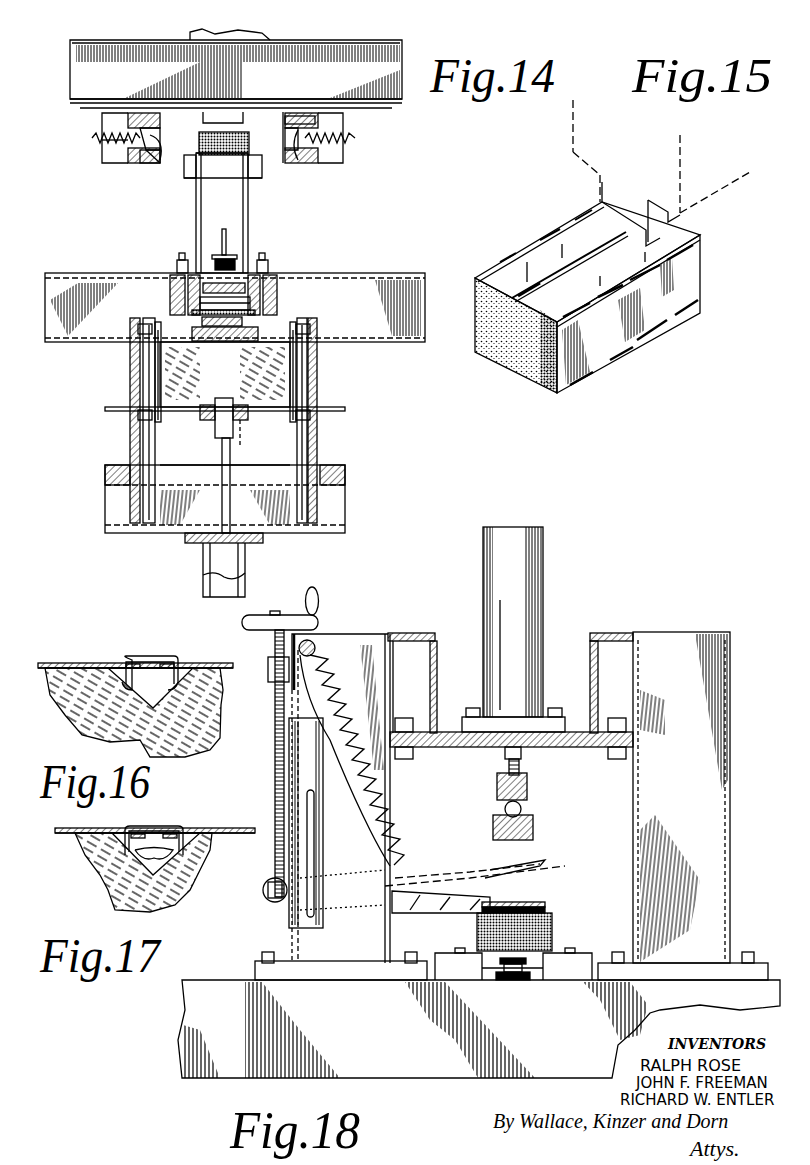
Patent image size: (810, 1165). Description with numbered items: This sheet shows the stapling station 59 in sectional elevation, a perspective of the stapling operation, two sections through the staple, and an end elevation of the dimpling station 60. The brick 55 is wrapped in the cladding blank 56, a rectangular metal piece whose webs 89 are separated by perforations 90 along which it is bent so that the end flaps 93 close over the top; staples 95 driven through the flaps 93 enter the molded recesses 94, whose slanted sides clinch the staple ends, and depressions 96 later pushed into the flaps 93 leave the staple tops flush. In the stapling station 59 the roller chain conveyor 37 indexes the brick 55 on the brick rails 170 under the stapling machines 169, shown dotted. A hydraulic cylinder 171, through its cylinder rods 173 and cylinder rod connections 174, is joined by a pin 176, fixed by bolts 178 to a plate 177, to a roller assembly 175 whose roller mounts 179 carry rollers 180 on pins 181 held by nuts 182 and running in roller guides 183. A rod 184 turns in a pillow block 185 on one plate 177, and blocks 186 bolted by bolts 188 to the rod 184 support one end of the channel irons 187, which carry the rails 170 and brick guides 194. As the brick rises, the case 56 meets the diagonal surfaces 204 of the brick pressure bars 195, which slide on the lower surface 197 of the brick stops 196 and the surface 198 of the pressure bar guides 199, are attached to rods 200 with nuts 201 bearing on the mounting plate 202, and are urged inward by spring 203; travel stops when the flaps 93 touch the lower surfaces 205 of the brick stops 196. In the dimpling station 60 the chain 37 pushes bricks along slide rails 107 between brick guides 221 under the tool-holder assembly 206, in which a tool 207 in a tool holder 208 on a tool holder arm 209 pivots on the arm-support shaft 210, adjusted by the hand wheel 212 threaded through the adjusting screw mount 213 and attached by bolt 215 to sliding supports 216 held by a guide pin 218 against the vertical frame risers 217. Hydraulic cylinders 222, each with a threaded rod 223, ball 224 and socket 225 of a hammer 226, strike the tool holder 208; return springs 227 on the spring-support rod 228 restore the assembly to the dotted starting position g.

In FIG. 14, the roller chain conveyor 37 is at (228, 257).
In FIG. 18, the roller chain conveyor 37 is at (513, 982).
In FIG. 14, the brick 55 is at (245, 170).
In FIG. 15, the brick 55 is at (512, 357).
In FIG. 16, the brick 55 is at (216, 720).
In FIG. 17, the brick 55 is at (108, 878).
In FIG. 14, the cladding blank 56 is at (200, 138).
In FIG. 15, the cladding blank 56 is at (700, 292).
In FIG. 16, the cladding blank 56 is at (95, 662).
In FIG. 17, the cladding blank 56 is at (100, 830).
In FIG. 14, the stapling station 59 is at (355, 225).
In FIG. 18, the dimpling station 60 is at (548, 630).
In FIG. 15, the webs 89 is at (655, 340).
In FIG. 15, the perforations 90 is at (590, 205).
In FIG. 14, the end flaps 93 is at (238, 135).
In FIG. 15, the end flaps 93 is at (566, 257).
In FIG. 16, the end flaps 93 is at (200, 662).
In FIG. 17, the end flaps 93 is at (200, 830).
In FIG. 16, the recesses 94 is at (162, 702).
In FIG. 17, the recesses 94 is at (165, 872).
In FIG. 15, the staples 95 is at (545, 280).
In FIG. 16, the staples 95 is at (148, 658).
In FIG. 17, the staples 95 is at (148, 828).
In FIG. 17, the depressions 96 is at (178, 830).
In FIG. 18, the slide rails 107 is at (465, 980).
In FIG. 14, the stapling machines 169 is at (213, 118).
In FIG. 15, the stapling machines 169 is at (654, 167).
In FIG. 14, the brick rails 170 is at (190, 165).
In FIG. 14, the hydraulic cylinder 171 is at (203, 566).
In FIG. 14, the cylinder rods 173 is at (222, 465).
In FIG. 14, the cylinder rod connections 174 is at (230, 445).
In FIG. 14, the roller assembly 175 is at (176, 412).
In FIG. 14, the pin 176 is at (242, 420).
In FIG. 14, the plate 177 is at (220, 387).
In FIG. 14, the bolts 178 is at (241, 435).
In FIG. 14, the roller mounts 179 is at (135, 358).
In FIG. 14, the rollers 180 is at (143, 324).
In FIG. 14, the pins 181 is at (157, 330).
In FIG. 14, the nuts 182 is at (296, 322).
In FIG. 14, the roller guides 183 is at (304, 469).
In FIG. 14, the rod 184 is at (270, 305).
In FIG. 14, the pillow block 185 is at (230, 341).
In FIG. 14, the blocks 186 is at (178, 283).
In FIG. 14, the channel irons 187 is at (200, 202).
In FIG. 14, the bolts 188 is at (180, 260).
In FIG. 14, the brick guides 194 is at (240, 170).
In FIG. 14, the brick pressure bars 195 is at (160, 136).
In FIG. 14, the brick stops 196 is at (291, 124).
In FIG. 14, the lower surface 197 is at (284, 112).
In FIG. 14, the surface 198 is at (150, 156).
In FIG. 14, the pressure bar guides 199 is at (140, 160).
In FIG. 14, the rods 200 is at (92, 138).
In FIG. 14, the nuts 201 is at (355, 138).
In FIG. 14, the mounting plate 202 is at (100, 118).
In FIG. 14, the spring 203 is at (335, 127).
In FIG. 14, the diagonal surfaces 204 is at (162, 160).
In FIG. 14, the lower surfaces 205 is at (172, 140).
In FIG. 18, the tool-holder assembly 206 is at (450, 932).
In FIG. 18, the tool 207 is at (522, 903).
In FIG. 18, the tool holder 208 is at (546, 910).
In FIG. 18, the tool holder arm 209 is at (430, 917).
In FIG. 18, the arm-support shaft 210 is at (263, 893).
In FIG. 18, the hand wheel 212 is at (257, 615).
In FIG. 18, the adjusting screw mount 213 is at (268, 677).
In FIG. 18, the bolt 215 is at (312, 899).
In FIG. 18, the sliding supports 216 is at (323, 822).
In FIG. 18, the vertical frame risers 217 is at (363, 635).
In FIG. 18, the guide pin 218 is at (313, 792).
In FIG. 18, the brick guides 221 is at (440, 955).
In FIG. 18, the hydraulic cylinders 222 is at (483, 564).
In FIG. 18, the threaded rod 223 is at (522, 774).
In FIG. 18, the ball 224 is at (520, 815).
In FIG. 18, the socket 225 is at (521, 822).
In FIG. 18, the hammer 226 is at (533, 837).
In FIG. 18, the return springs 227 is at (318, 670).
In FIG. 18, the spring-support rod 228 is at (310, 640).
In FIG. 18, the dotted area g is at (470, 868).